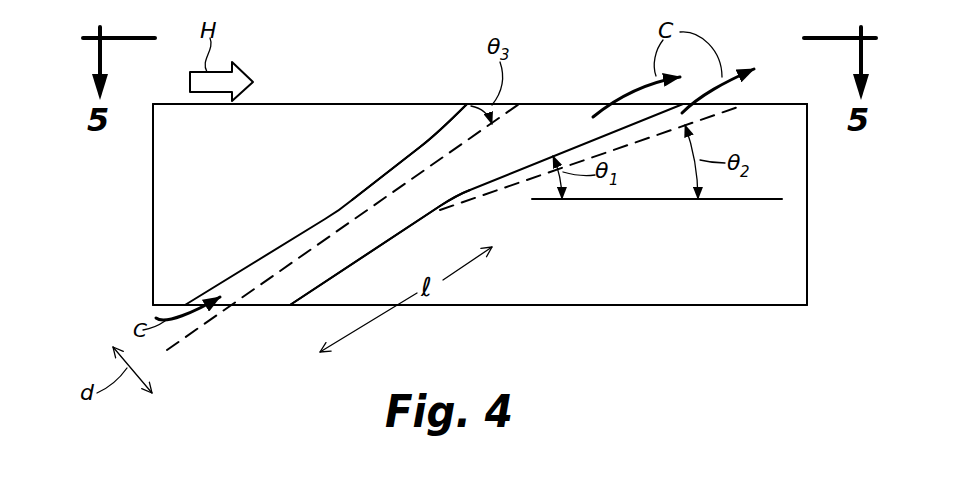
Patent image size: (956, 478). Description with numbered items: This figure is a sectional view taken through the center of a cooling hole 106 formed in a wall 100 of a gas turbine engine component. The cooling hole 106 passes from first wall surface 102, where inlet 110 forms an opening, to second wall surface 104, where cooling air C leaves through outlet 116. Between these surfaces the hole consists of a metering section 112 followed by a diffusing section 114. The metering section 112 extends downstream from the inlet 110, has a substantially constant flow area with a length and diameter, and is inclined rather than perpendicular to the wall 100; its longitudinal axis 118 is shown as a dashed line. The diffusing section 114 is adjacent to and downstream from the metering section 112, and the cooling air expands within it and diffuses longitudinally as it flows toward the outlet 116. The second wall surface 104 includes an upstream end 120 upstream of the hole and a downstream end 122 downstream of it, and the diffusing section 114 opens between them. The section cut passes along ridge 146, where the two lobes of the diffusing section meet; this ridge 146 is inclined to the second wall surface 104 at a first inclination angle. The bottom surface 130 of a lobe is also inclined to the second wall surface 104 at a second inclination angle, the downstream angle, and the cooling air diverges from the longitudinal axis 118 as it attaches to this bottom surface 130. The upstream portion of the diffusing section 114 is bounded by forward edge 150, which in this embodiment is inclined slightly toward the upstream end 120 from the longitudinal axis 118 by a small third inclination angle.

The wall 100 is at (150, 243).
The first wall surface 102 is at (753, 307).
The second wall surface 104 is at (313, 104).
The cooling hole 106 is at (338, 208).
The inlet 110 is at (273, 307).
The metering section 112 is at (333, 278).
The diffusing section 114 is at (545, 102).
The outlet 116 is at (583, 103).
The longitudinal axis 118 is at (190, 334).
The upstream end 120 is at (466, 103).
The downstream end 122 is at (788, 103).
The bottom surface 130 is at (715, 112).
The ridge 146 is at (528, 168).
The forward edge 150 is at (438, 136).